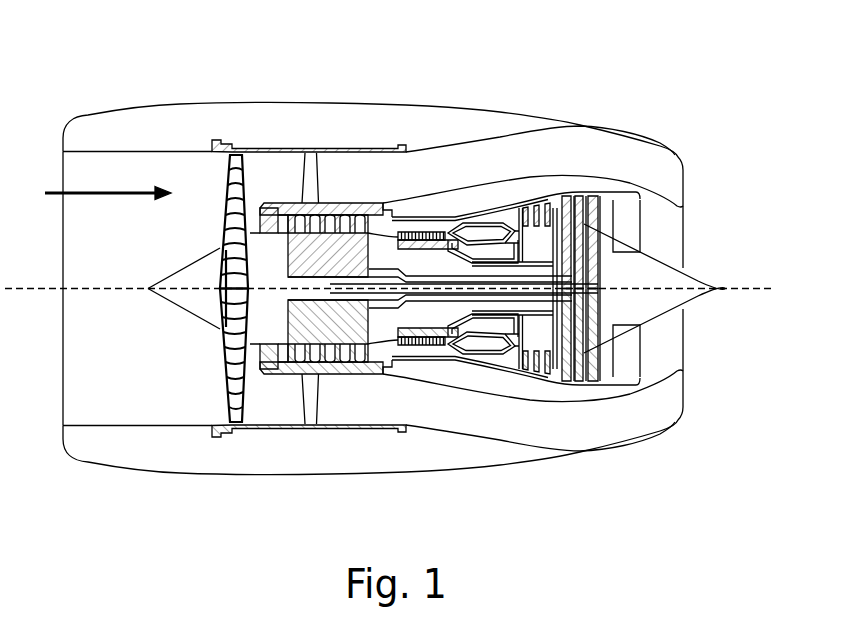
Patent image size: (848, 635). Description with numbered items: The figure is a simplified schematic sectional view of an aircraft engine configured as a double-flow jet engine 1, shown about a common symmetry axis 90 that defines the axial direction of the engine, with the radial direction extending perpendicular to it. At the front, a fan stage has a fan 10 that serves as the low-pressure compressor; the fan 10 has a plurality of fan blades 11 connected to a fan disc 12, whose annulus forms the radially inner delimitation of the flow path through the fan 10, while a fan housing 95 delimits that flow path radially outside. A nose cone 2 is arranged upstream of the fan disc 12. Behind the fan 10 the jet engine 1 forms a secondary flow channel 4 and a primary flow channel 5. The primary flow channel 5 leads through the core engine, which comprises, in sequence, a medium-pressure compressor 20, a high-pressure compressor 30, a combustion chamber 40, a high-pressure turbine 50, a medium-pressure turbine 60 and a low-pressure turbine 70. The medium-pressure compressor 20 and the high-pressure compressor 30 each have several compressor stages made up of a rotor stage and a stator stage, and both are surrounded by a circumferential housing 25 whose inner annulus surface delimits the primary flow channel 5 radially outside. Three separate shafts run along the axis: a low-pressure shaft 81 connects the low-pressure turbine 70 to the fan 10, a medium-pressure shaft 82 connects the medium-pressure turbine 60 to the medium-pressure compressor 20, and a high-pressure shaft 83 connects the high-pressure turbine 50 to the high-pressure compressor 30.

The double-flow jet engine 1 is at (406, 98).
The nose cone 2 is at (188, 264).
The secondary flow channel 4 is at (263, 177).
The primary flow channel 5 is at (281, 215).
The fan 10 is at (215, 204).
The fan blades 11 is at (236, 376).
The fan disc 12 is at (217, 325).
The medium-pressure compressor 20 is at (329, 217).
The circumferential housing 25 is at (368, 205).
The high-pressure compressor 30 is at (428, 244).
The combustion chamber 40 is at (482, 237).
The high-pressure turbine 50 is at (532, 220).
The medium-pressure turbine 60 is at (552, 207).
The low-pressure turbine 70 is at (600, 212).
The low-pressure shaft 81 is at (445, 293).
The medium-pressure shaft 82 is at (482, 303).
The high-pressure shaft 83 is at (508, 316).
The symmetry axis 90 is at (752, 288).
The fan housing 95 is at (239, 150).